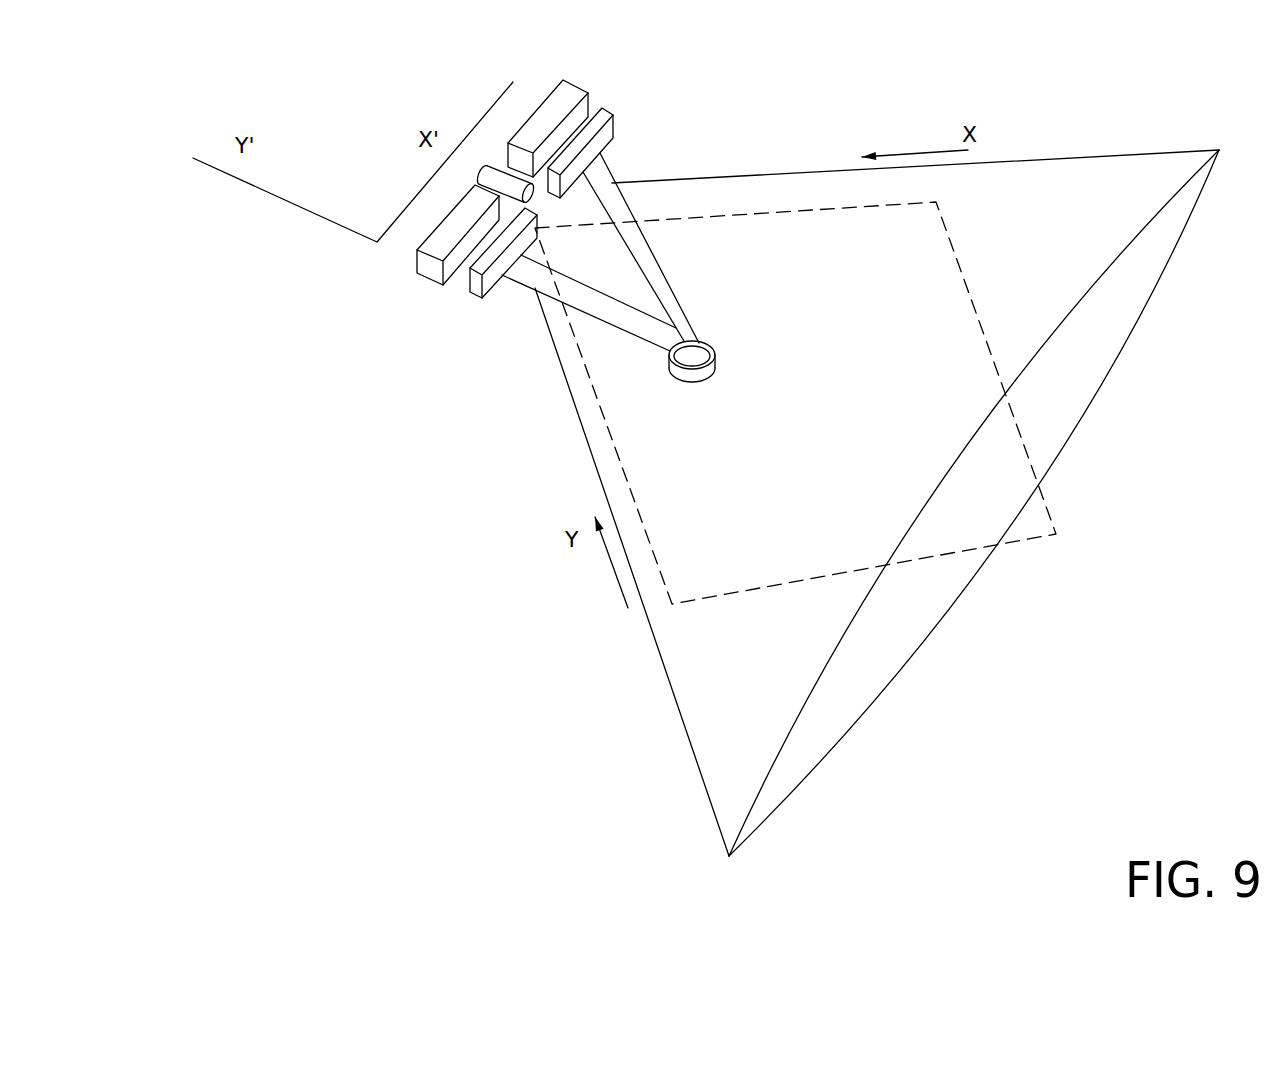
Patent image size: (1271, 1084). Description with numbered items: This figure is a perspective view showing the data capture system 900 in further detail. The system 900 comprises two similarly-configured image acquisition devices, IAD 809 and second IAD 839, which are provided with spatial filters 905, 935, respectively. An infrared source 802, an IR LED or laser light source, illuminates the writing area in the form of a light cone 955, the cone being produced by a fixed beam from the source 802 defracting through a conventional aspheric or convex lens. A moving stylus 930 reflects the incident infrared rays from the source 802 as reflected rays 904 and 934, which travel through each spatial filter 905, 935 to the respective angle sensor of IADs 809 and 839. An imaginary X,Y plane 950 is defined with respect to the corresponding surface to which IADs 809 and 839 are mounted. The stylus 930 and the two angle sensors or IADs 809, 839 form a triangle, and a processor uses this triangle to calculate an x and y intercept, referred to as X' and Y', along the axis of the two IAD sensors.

The imaging system 900 is at (576, 768).
The cylindrical rotation element 802 is at (495, 165).
The block element 809 is at (428, 268).
The block element 839 is at (577, 84).
The block element 935 is at (613, 115).
The block element 905 is at (492, 303).
The strut 934 is at (652, 250).
The strut 904 is at (615, 328).
The ring / lens mount 930 is at (695, 388).
The image plane (dashed) 950 is at (1000, 488).
The curved lens surface 955 is at (1115, 302).